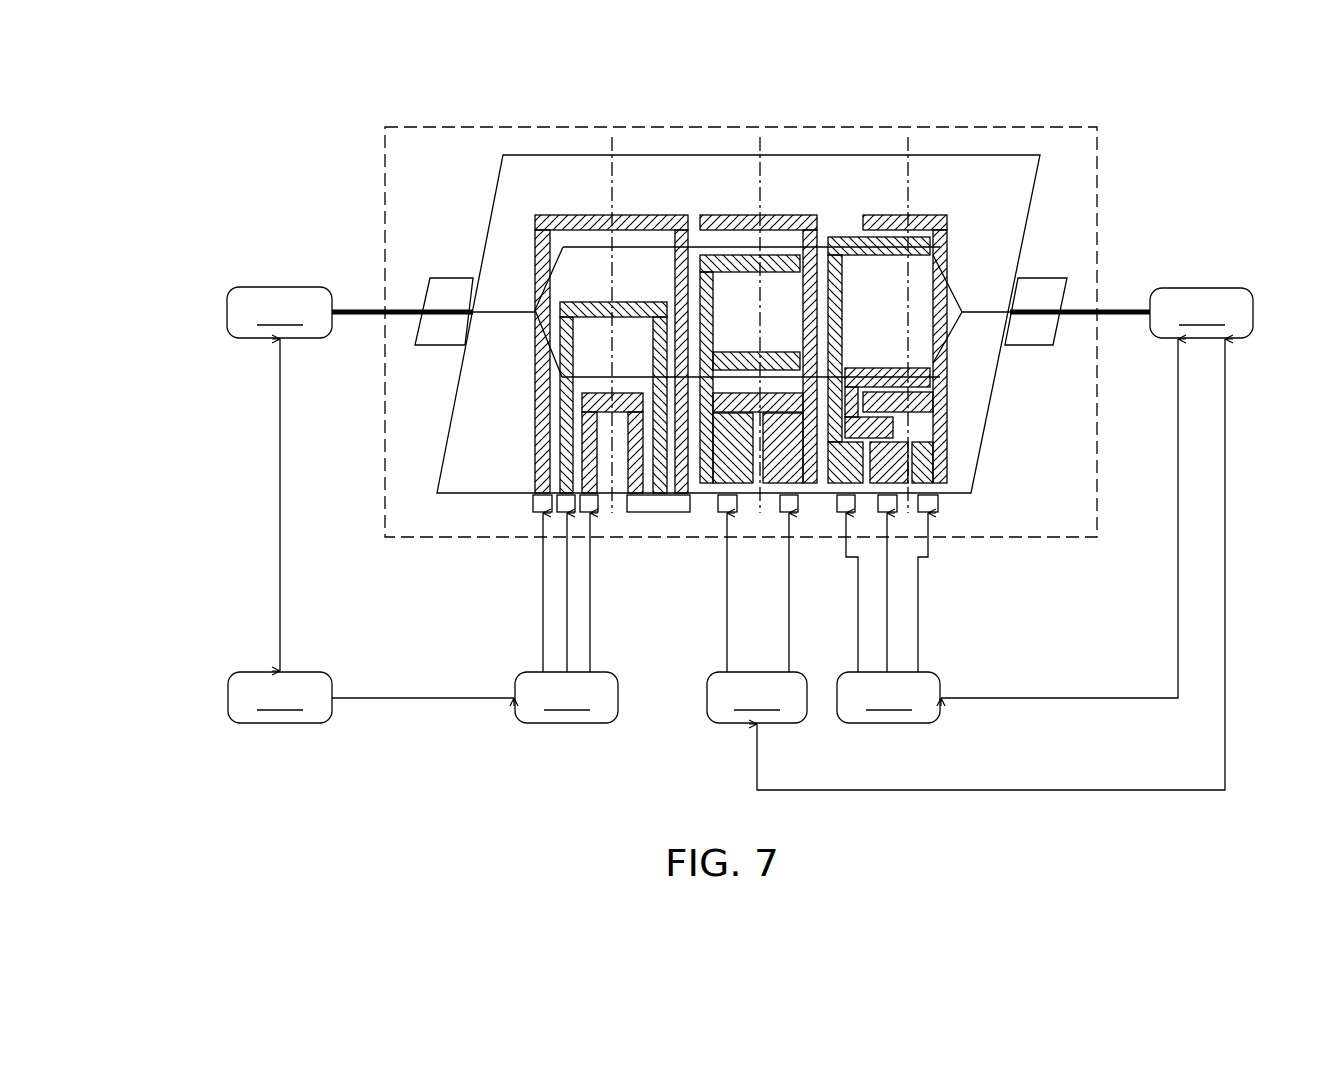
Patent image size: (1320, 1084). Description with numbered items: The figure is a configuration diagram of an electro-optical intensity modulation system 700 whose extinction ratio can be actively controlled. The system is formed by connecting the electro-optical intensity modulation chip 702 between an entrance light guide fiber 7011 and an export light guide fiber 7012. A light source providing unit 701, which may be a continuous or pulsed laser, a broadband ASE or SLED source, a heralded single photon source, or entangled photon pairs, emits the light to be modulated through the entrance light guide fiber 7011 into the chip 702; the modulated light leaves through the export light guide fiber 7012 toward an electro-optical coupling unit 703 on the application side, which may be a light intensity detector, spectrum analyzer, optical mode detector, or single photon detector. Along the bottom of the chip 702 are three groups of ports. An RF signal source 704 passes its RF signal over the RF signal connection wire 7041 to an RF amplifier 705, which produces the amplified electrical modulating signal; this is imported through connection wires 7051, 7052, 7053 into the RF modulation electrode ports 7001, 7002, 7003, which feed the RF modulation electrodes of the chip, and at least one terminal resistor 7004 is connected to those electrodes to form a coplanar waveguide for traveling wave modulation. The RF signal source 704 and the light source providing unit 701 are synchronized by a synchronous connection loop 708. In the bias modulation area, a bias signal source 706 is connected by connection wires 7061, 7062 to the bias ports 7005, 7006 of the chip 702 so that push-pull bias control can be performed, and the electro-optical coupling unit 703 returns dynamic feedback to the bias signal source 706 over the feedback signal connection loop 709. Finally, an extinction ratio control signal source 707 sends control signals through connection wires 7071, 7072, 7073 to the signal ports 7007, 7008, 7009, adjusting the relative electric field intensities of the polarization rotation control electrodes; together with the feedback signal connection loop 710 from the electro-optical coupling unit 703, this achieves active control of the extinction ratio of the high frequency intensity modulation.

The electro-optical intensity modulation system 700 is at (383, 157).
The light source providing unit 701 is at (279, 312).
The electro-optical intensity modulation chip 702 is at (1032, 192).
The electro-optical coupling unit 703 is at (1201, 313).
The RF signal source 704 is at (280, 697).
The RF amplifier 705 is at (566, 697).
The bias signal source 706 is at (757, 697).
The extinction ratio control signal source 707 is at (888, 697).
The synchronous connection loop 708 is at (278, 500).
The feedback signal connection loop 709 is at (935, 788).
The feedback signal connection loop 710 is at (1105, 700).
The RF modulation electrode port 7001 is at (532, 503).
The RF modulation electrode port 7002 is at (558, 488).
The RF modulation electrode port 7003 is at (592, 503).
The terminal resistor 7004 is at (660, 503).
The bias port 7005 is at (720, 507).
The bias port 7006 is at (780, 508).
The signal port 7007 is at (838, 508).
The signal port 7008 is at (887, 502).
The signal port 7009 is at (932, 503).
The entrance light guide fiber 7011 is at (363, 308).
The export light guide fiber 7012 is at (1120, 307).
The RF signal connection wire 7041 is at (372, 698).
The connection wire 7051 is at (542, 653).
The connection wire 7052 is at (563, 617).
The connection wire 7053 is at (590, 662).
The connection wire 7061 is at (722, 653).
The connection wire 7062 is at (817, 640).
The connection wire 7071 is at (858, 608).
The connection wire 7072 is at (888, 645).
The connection wire 7073 is at (920, 658).